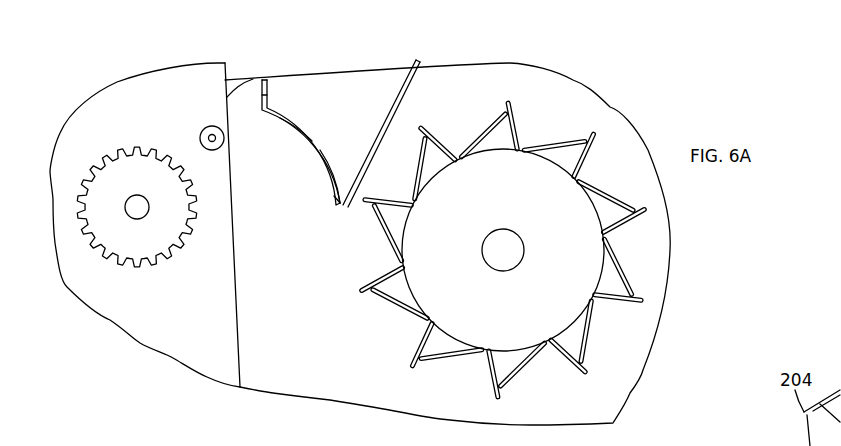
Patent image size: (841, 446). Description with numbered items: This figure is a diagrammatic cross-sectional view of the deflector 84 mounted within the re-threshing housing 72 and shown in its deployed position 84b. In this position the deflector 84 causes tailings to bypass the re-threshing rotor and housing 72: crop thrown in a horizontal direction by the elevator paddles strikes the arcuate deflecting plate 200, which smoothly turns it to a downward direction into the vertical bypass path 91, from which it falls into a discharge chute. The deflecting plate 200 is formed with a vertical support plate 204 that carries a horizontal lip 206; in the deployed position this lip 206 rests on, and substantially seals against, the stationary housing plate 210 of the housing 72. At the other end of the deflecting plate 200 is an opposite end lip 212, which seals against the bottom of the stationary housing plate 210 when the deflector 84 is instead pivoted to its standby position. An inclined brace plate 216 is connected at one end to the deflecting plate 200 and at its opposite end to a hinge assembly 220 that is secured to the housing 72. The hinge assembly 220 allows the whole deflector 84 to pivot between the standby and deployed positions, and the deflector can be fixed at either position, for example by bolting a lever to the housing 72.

The re-threshing housing 72 is at (573, 80).
The deflector 84 is at (318, 124).
The deployed position 84b is at (320, 177).
The vertical bypass path 91 is at (300, 321).
The arcuate deflecting plate 200 is at (305, 135).
The vertical support plate 204 is at (268, 97).
The horizontal lip 206 is at (257, 80).
The stationary housing plate 210 is at (227, 97).
The opposite end lip 212 is at (334, 204).
The inclined brace plate 216 is at (407, 103).
The hinge assembly 220 is at (424, 58).